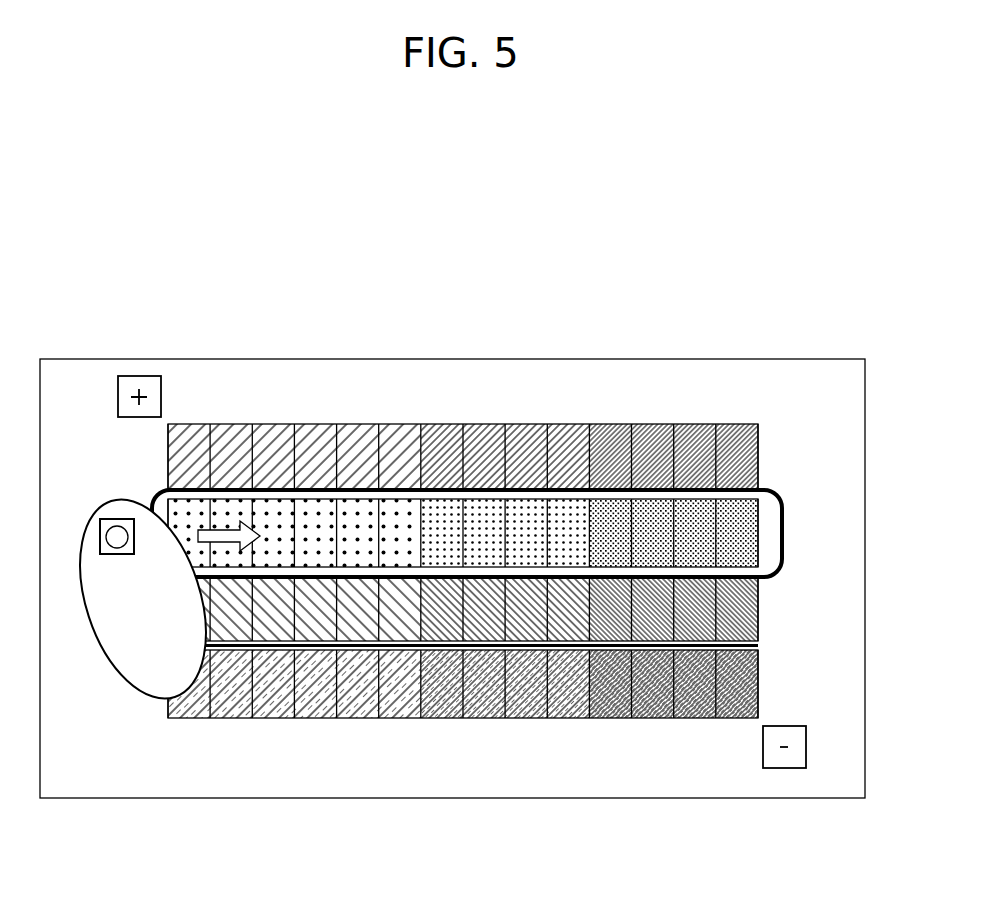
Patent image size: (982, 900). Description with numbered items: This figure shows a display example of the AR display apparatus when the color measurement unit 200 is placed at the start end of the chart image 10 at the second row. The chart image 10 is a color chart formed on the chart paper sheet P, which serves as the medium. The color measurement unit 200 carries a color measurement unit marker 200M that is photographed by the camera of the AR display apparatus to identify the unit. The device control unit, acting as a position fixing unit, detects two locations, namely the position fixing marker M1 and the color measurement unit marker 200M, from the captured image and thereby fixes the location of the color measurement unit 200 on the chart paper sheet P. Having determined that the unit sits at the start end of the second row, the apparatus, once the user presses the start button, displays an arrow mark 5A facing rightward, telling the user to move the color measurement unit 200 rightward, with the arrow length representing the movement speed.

The chart paper sheet P is at (481, 318).
The chart image 10 is at (645, 412).
The arrow mark 5A is at (238, 513).
The position fixing marker M1 is at (176, 383).
The color measurement unit 200 is at (125, 684).
The color measurement unit marker 200M is at (117, 519).